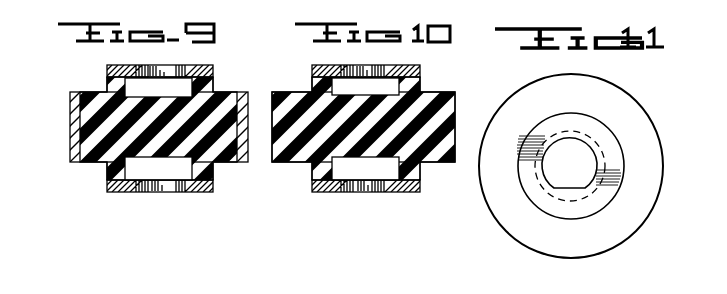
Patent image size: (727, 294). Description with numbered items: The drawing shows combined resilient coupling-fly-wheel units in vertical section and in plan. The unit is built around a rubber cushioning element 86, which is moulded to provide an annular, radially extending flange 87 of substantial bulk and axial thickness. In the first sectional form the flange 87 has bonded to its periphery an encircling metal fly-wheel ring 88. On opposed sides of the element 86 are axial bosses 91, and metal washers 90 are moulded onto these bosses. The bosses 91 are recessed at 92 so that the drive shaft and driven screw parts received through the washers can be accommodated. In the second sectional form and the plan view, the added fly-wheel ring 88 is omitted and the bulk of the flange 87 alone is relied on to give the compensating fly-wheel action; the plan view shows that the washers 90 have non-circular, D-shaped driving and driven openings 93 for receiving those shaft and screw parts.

In FIG. 9, the rubber cushioning element 86 is at (142, 128).
In FIG. 10, the rubber cushioning element 86 is at (409, 125).
In FIG. 9, the annular, radially extending flange 87 is at (90, 158).
In FIG. 10, the annular, radially extending flange 87 is at (456, 100).
In FIG. 11, the annular, radially extending flange 87 is at (640, 134).
In FIG. 9, the fly-wheel ring 88 is at (249, 98).
In FIG. 9, the metal washers 90 is at (212, 66).
In FIG. 10, the metal washers 90 is at (408, 68).
In FIG. 11, the metal washers 90 is at (584, 125).
In FIG. 9, the axial bosses 91 is at (108, 80).
In FIG. 10, the axial bosses 91 is at (313, 80).
In FIG. 9, the recess 92 is at (191, 90).
In FIG. 10, the recess 92 is at (398, 92).
In FIG. 11, the recess 92 is at (596, 186).
In FIG. 9, the D-shaped driving and driven openings 93 is at (157, 70).
In FIG. 10, the D-shaped driving and driven openings 93 is at (352, 84).
In FIG. 11, the D-shaped driving and driven openings 93 is at (545, 168).